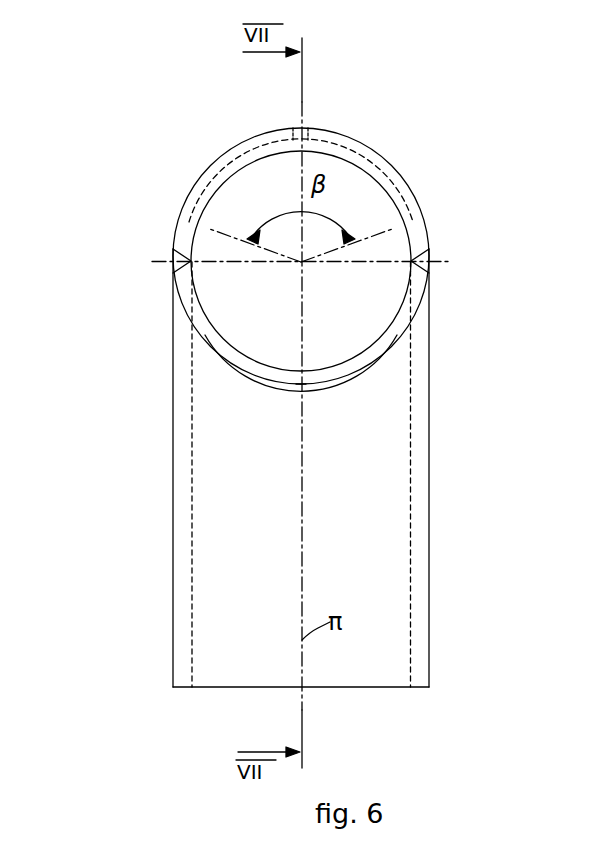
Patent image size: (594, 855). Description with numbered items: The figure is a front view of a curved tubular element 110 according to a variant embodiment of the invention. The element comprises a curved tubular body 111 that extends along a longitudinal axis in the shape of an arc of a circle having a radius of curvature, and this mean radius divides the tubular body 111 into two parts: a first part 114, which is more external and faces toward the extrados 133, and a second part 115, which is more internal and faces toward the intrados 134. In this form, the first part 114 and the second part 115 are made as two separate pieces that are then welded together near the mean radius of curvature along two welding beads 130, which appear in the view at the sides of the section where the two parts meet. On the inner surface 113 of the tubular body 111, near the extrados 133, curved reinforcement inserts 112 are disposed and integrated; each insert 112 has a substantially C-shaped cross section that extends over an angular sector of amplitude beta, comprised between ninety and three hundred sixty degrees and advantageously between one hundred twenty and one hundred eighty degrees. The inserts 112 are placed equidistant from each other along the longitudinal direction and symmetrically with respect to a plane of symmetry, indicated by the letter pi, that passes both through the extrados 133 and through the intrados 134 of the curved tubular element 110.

The curved tubular element 110 is at (200, 125).
The curved tubular body 111 is at (430, 546).
The reinforcement inserts 112 is at (338, 147).
The inner surface 113 is at (347, 356).
The first part 114 is at (405, 193).
The second part 115 is at (385, 341).
The welding beads 130 is at (186, 261).
The extrados 133 is at (300, 126).
The intrados 134 is at (301, 386).